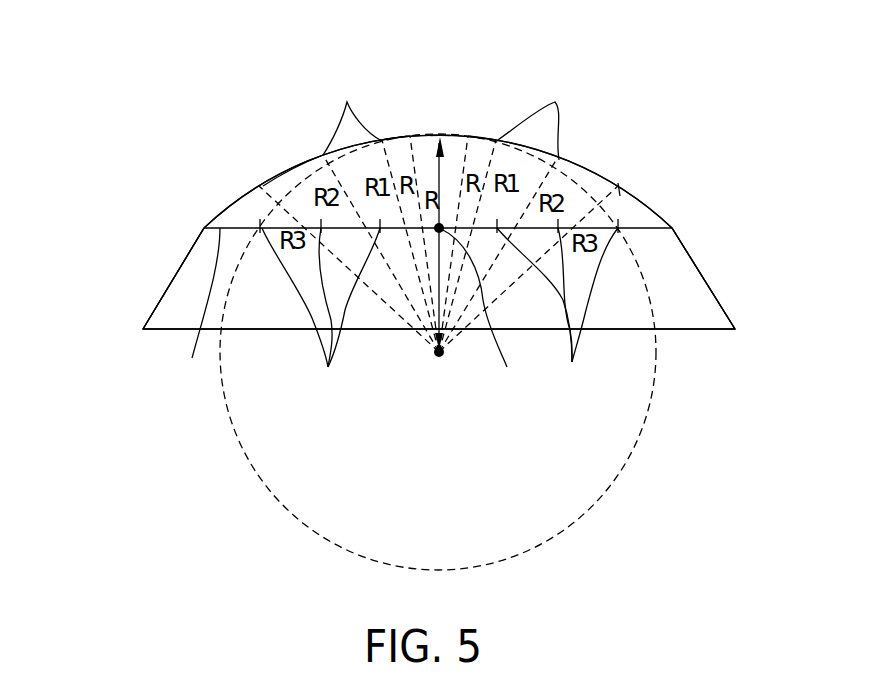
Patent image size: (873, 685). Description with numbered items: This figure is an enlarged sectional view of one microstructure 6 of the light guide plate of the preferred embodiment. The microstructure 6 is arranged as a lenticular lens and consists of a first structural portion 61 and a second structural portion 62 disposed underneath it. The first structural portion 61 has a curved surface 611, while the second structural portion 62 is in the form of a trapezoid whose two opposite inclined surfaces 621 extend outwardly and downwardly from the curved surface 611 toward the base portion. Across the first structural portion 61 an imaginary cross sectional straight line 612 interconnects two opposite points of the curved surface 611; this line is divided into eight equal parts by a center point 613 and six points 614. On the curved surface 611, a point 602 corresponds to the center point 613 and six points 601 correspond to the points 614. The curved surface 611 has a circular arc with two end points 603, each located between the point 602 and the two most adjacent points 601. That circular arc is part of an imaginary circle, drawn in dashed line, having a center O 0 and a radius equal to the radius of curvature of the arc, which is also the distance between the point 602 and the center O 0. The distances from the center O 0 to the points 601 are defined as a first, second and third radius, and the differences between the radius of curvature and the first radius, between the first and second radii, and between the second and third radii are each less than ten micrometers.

The microstructure 6 is at (208, 188).
The first structural portion 61 is at (237, 208).
The second structural portion 62 is at (188, 300).
The points 601 is at (265, 192).
The point 602 is at (440, 135).
The end points 603 is at (410, 138).
The curved surface 611 is at (296, 143).
The cross sectional straight line 612 is at (193, 309).
The center point 613 is at (483, 314).
The points 614 is at (440, 315).
The inclined surface 621 is at (180, 257).
The center O 0 is at (438, 368).